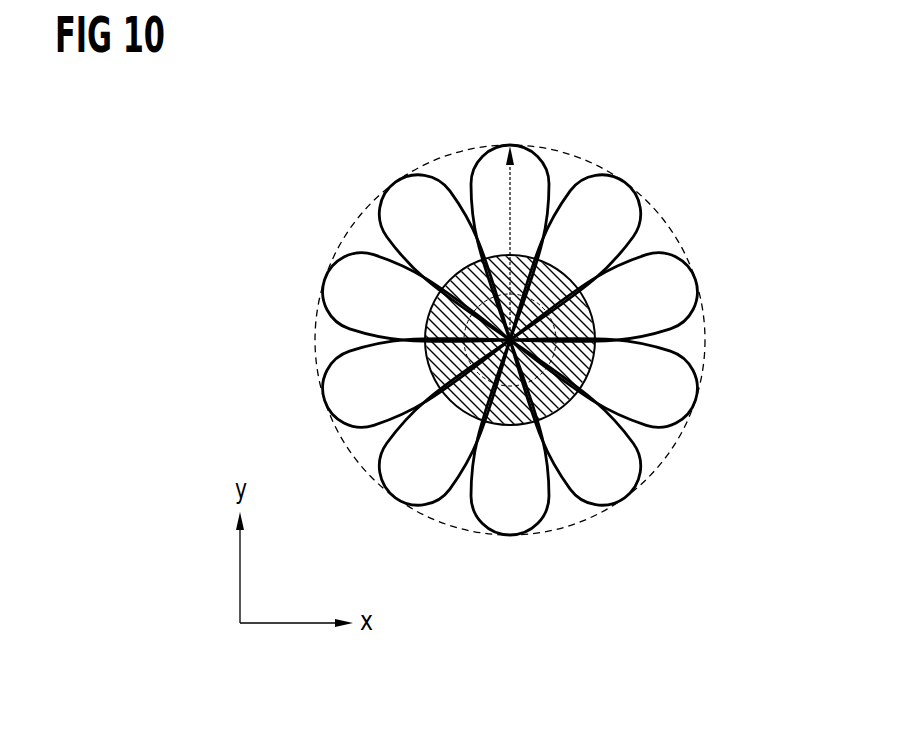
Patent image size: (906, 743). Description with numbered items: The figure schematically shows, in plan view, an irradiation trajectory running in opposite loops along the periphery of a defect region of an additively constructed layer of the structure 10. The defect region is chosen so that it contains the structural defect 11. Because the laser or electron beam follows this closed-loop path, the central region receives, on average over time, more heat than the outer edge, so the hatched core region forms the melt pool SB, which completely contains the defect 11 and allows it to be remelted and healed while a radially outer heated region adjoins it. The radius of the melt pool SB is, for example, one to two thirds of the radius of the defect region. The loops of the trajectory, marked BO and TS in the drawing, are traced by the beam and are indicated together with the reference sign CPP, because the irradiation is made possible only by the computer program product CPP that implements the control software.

The structure 10 is at (643, 435).
The structural defect 11 is at (592, 370).
The melt pool SB is at (594, 318).
The bore / lobe opening BO is at (321, 290).
The tooth side / lobe TS is at (391, 186).
The computer program product CPP is at (235, 225).